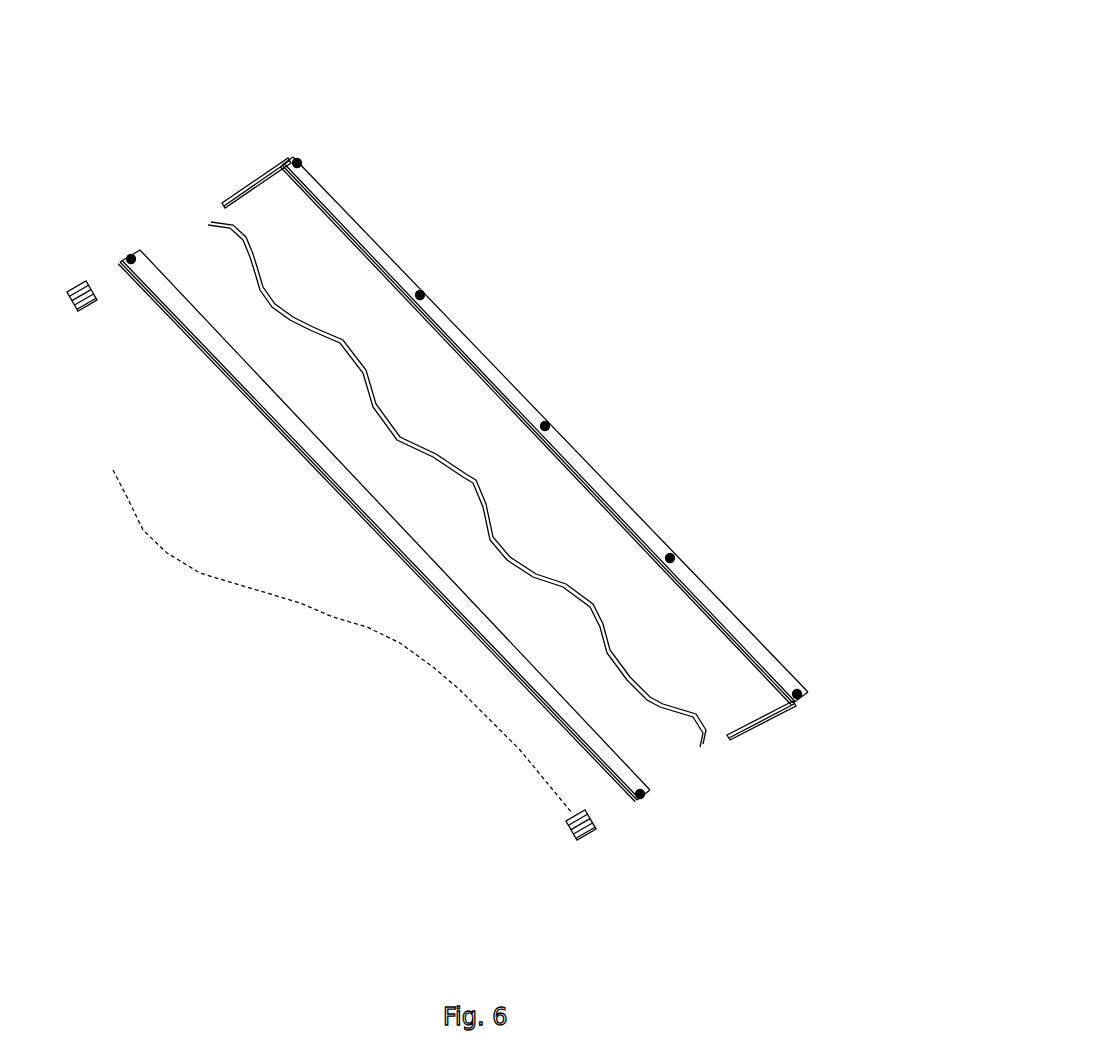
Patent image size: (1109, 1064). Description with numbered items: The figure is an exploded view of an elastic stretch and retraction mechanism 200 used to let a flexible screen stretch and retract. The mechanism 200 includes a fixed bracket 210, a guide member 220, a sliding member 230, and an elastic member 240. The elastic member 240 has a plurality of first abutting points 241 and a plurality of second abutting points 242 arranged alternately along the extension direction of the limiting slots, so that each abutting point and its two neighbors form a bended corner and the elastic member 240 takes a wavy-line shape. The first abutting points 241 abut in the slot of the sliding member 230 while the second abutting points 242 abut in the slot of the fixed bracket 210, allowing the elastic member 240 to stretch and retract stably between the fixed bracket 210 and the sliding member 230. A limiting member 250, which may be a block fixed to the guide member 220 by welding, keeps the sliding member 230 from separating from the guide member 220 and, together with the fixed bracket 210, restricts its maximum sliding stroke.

The elastic stretch and retraction mechanism 200 is at (960, 58).
The fixed bracket 210 is at (565, 431).
The guide member 220 is at (544, 414).
The sliding member 230 is at (467, 551).
The elastic member 240 is at (457, 467).
The first abutting points 241 is at (260, 290).
The second abutting points 242 is at (477, 480).
The limiting member 250 is at (320, 560).